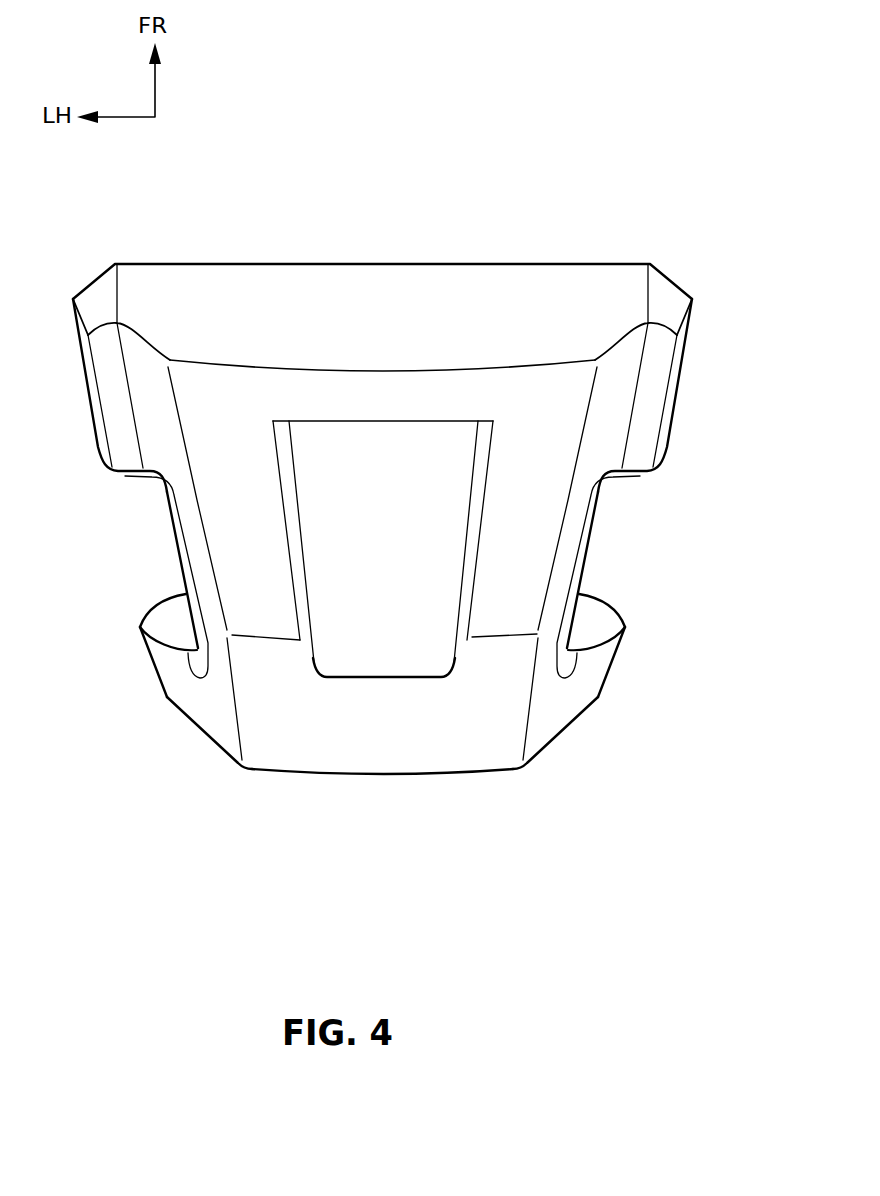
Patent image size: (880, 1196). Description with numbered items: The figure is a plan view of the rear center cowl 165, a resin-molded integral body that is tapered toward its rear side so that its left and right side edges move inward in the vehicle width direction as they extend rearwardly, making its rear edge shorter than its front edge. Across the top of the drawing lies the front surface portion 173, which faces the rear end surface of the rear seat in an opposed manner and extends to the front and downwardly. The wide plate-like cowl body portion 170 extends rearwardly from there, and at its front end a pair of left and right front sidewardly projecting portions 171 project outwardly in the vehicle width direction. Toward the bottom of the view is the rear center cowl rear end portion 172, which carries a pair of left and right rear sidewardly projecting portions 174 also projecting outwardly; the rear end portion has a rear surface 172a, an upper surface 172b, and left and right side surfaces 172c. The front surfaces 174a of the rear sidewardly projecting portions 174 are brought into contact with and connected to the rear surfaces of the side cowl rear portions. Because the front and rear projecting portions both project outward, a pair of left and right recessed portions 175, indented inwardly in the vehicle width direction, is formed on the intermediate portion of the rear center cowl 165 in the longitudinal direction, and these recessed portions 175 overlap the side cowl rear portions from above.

The rear center cowl 165 is at (406, 121).
The cowl body portion 170 is at (449, 450).
The front sidewardly projecting portion 171 is at (115, 393).
The rear center cowl rear end portion 172 is at (444, 763).
The rear surface 172a is at (370, 777).
The upper surface 172b is at (340, 730).
The side surface 172c is at (172, 705).
The front surface portion 173 is at (302, 283).
The rear sidewardly projecting portion 174 is at (173, 665).
The front surface 174a is at (167, 612).
The recessed portion 175 is at (173, 543).